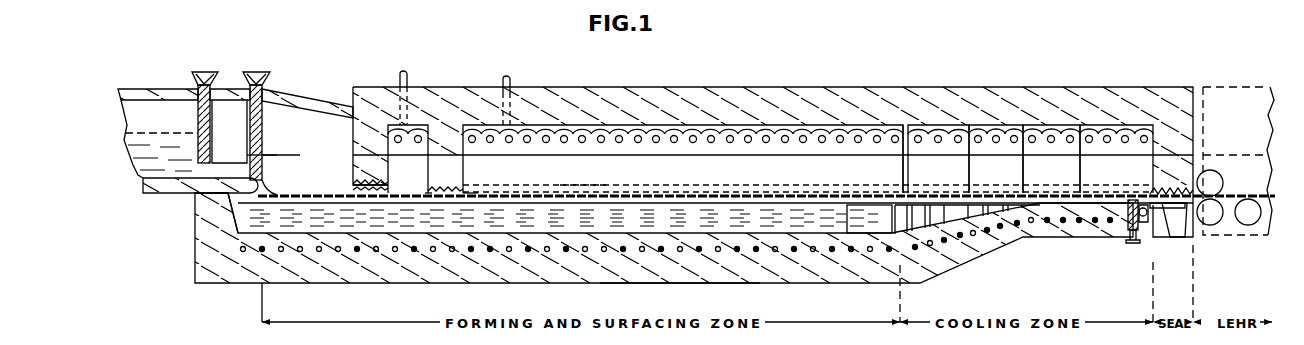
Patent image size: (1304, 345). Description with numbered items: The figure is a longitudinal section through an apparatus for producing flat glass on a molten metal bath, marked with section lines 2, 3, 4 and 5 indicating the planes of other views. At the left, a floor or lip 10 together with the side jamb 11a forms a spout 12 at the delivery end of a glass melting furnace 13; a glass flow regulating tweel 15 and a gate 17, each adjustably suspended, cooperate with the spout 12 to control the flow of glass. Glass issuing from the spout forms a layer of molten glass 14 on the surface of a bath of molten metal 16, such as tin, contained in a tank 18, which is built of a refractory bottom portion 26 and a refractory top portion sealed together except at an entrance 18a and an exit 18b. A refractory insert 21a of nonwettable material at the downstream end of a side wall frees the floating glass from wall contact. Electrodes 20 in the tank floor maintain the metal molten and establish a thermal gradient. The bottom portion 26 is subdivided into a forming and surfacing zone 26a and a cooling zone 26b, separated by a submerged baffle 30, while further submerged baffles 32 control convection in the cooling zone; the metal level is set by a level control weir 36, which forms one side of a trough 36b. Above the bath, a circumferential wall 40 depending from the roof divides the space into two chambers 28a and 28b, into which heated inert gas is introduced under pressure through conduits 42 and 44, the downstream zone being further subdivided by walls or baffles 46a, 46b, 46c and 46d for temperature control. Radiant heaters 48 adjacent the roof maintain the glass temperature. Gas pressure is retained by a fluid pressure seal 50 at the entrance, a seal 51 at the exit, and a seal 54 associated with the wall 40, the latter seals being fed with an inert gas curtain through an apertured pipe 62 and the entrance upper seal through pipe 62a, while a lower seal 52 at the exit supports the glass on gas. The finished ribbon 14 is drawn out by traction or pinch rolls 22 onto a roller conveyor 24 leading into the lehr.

The section line 2- 2 is at (217, 118).
The section line 3- 3 is at (852, 122).
The section line 4- 4 is at (1143, 182).
The section line 5- 5 is at (1172, 255).
The floor or lip 10 is at (190, 197).
The side jamb 11a is at (243, 137).
The spout 12 is at (264, 178).
The glass melting furnace 13 is at (164, 82).
The layer of molten glass 14 is at (640, 195).
The glass flow regulating tweel 15 is at (200, 72).
The bath of molten metal 16 is at (664, 251).
The gate 17 is at (256, 72).
The tank 18 is at (354, 84).
The entrance 18a is at (355, 183).
The exit 18b is at (1205, 190).
The electrodes 20 is at (517, 251).
The refractory insert 21a is at (428, 192).
The traction or pinch rolls 22 is at (1223, 188).
The roller conveyor 24 is at (1248, 226).
The refractory bottom portion 26 is at (660, 295).
The forming and surfacing zone 26a is at (720, 222).
The cooling zone 26b is at (977, 215).
The chamber 28a is at (388, 148).
The chamber 28b is at (596, 176).
The submerged baffle 30 is at (893, 217).
The submerged baffles 32 is at (928, 217).
The level control weir 36 is at (1128, 212).
The trough 36b is at (1148, 218).
The circumferential wall 40 is at (677, 130).
The conduit 42 is at (408, 73).
The conduit 44 is at (508, 80).
The wall or baffle 46a is at (903, 166).
The wall or baffle 46b is at (969, 168).
The wall or baffle 46c is at (1023, 168).
The wall or baffle 46d is at (1080, 168).
The radiant heaters 48 is at (603, 134).
The fluid pressure seal 50 is at (353, 190).
The fluid pressure seal 51 is at (1150, 186).
The lower seal 52 is at (1180, 228).
The seal 54 is at (475, 192).
The apertured pipe 62 is at (465, 190).
The pipe 62a is at (372, 180).